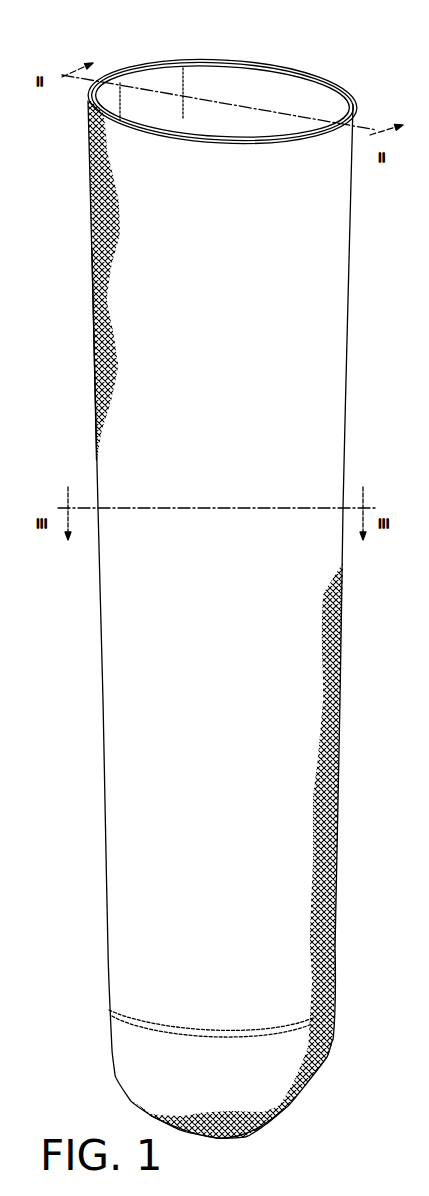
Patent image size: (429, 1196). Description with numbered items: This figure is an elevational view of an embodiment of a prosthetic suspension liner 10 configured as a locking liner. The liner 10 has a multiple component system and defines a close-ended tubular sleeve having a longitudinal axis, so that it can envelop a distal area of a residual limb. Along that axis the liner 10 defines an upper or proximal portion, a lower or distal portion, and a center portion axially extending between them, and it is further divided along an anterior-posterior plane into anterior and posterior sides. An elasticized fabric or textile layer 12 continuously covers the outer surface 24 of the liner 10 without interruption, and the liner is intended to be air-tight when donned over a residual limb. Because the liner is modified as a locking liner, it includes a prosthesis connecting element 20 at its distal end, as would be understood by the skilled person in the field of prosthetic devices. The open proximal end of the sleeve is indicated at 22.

The prosthetic suspension liner 10 is at (86, 774).
The elasticized fabric or textile layer 12 is at (90, 247).
The prosthesis connecting element 20 is at (217, 1135).
The rim / open top 22 is at (274, 89).
The outer surface 24 is at (90, 308).